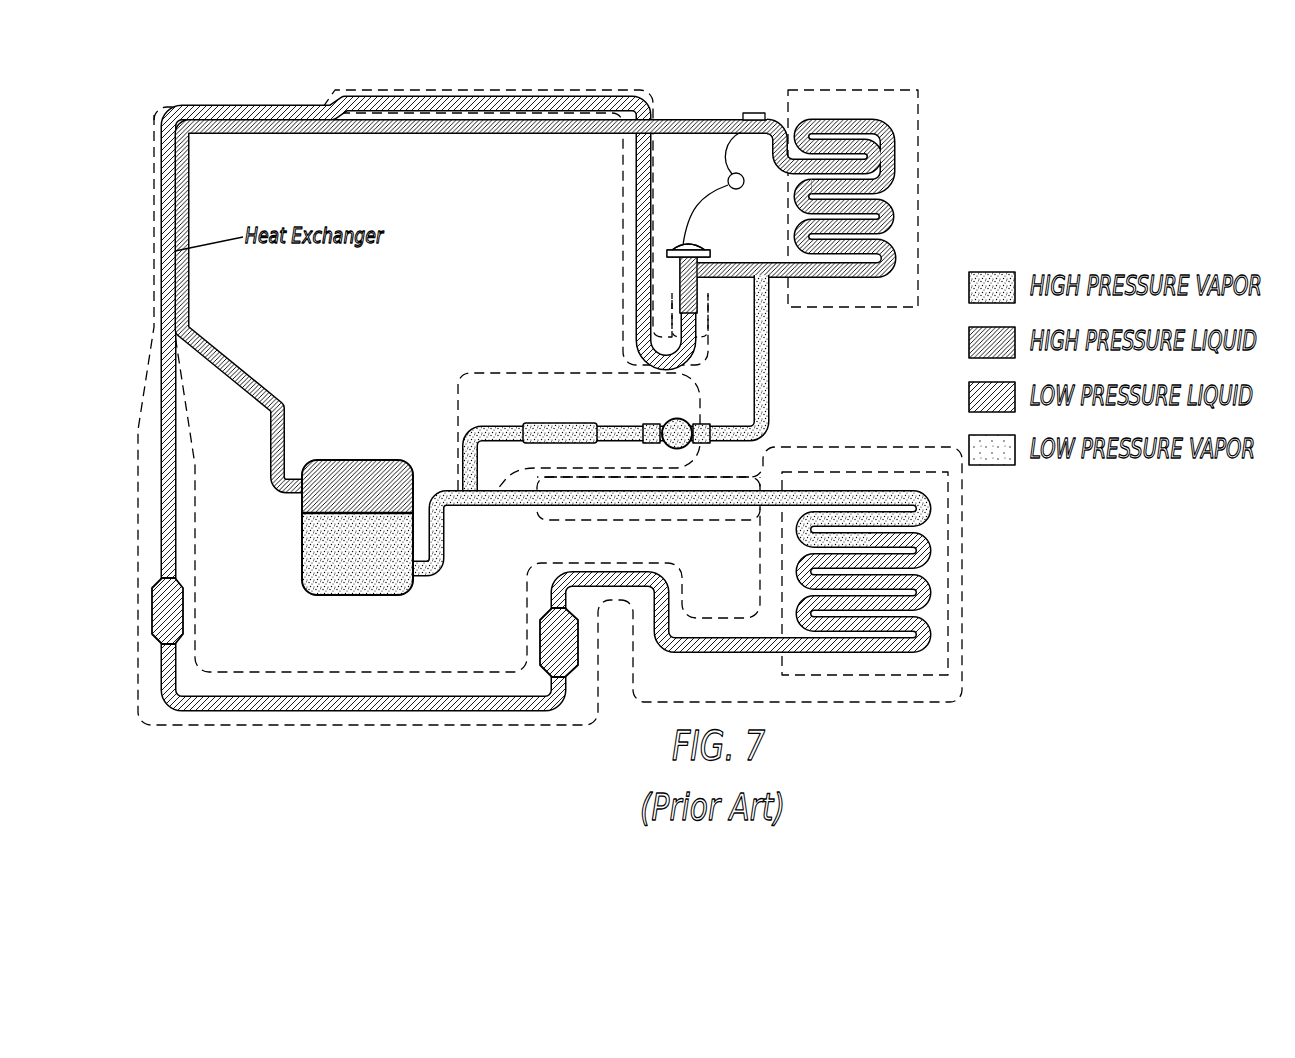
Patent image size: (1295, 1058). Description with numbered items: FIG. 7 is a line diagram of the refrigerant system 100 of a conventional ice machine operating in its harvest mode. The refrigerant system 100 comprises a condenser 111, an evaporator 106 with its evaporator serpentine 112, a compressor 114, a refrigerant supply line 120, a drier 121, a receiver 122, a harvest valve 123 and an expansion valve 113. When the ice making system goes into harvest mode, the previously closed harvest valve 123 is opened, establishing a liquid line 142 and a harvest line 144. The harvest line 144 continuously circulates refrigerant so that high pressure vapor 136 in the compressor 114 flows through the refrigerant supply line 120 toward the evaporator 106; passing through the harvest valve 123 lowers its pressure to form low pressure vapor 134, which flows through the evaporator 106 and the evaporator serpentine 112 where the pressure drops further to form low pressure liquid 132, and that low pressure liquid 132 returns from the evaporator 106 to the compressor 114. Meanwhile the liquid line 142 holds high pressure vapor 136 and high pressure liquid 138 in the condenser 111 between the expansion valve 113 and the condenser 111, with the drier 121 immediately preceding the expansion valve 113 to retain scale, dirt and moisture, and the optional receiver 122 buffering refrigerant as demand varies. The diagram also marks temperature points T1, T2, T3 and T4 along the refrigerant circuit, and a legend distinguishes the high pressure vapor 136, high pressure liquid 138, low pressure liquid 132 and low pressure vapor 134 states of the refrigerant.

The refrigerant system 100 is at (662, 74).
The evaporator 106 is at (905, 108).
The condenser 111 is at (937, 578).
The evaporator serpentine 112 is at (895, 148).
The expansion valve 113 is at (673, 293).
The compressor 114 is at (382, 483).
The refrigerant supply line 120 is at (242, 697).
The drier 121 is at (185, 610).
The receiver 122 is at (578, 642).
The harvest valve 123 is at (677, 418).
The low pressure liquid 132 is at (895, 217).
The low pressure vapor 134 is at (364, 124).
The high pressure vapor 136 is at (530, 497).
The high pressure liquid 138 is at (927, 630).
The liquid line 142 is at (240, 730).
The harvest line 144 is at (518, 372).
The temperature point T1 is at (725, 637).
The temperature point T2 is at (435, 523).
The temperature point T3 is at (777, 278).
The temperature point T4 is at (707, 119).